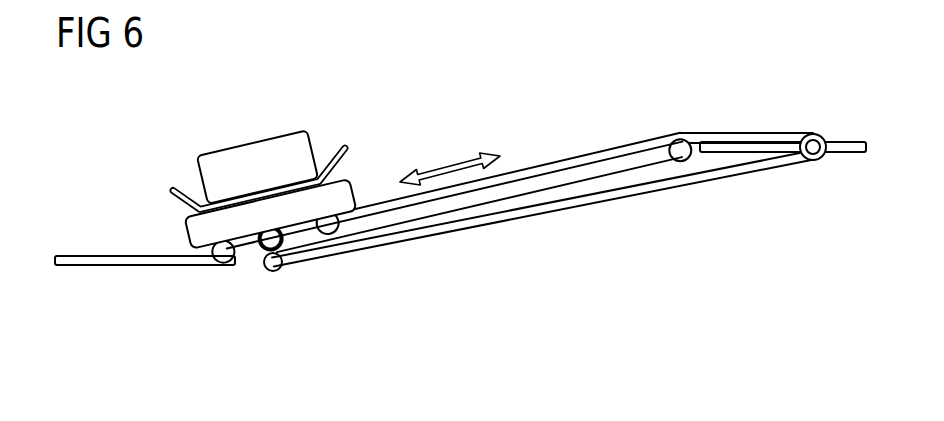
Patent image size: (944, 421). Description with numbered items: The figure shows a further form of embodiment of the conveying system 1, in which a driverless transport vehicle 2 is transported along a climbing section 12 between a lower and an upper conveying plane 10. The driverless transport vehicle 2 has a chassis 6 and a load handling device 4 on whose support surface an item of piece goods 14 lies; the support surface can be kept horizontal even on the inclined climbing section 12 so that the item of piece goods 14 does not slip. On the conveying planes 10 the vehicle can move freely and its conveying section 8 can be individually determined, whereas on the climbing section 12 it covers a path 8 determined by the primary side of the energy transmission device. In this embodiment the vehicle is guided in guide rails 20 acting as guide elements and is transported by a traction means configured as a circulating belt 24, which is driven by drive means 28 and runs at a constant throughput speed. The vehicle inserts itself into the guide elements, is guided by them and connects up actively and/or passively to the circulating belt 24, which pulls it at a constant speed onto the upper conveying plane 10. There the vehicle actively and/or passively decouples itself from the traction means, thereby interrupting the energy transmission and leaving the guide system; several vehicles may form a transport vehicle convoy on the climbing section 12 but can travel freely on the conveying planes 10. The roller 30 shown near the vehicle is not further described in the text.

The conveying system 1 is at (108, 124).
The driverless transport vehicle (AGV) 2 is at (243, 191).
The load handling device 4 is at (338, 147).
The chassis 6 is at (186, 233).
The conveying section / path 8 is at (446, 171).
The conveying plane 10 is at (57, 328).
The climbing section 12 is at (525, 229).
The item of piece goods 14 is at (222, 167).
The guide rail 20 is at (797, 134).
The circulating belt 24 is at (757, 132).
The drive means 28 is at (263, 267).
The carrier wheel 30 is at (226, 252).